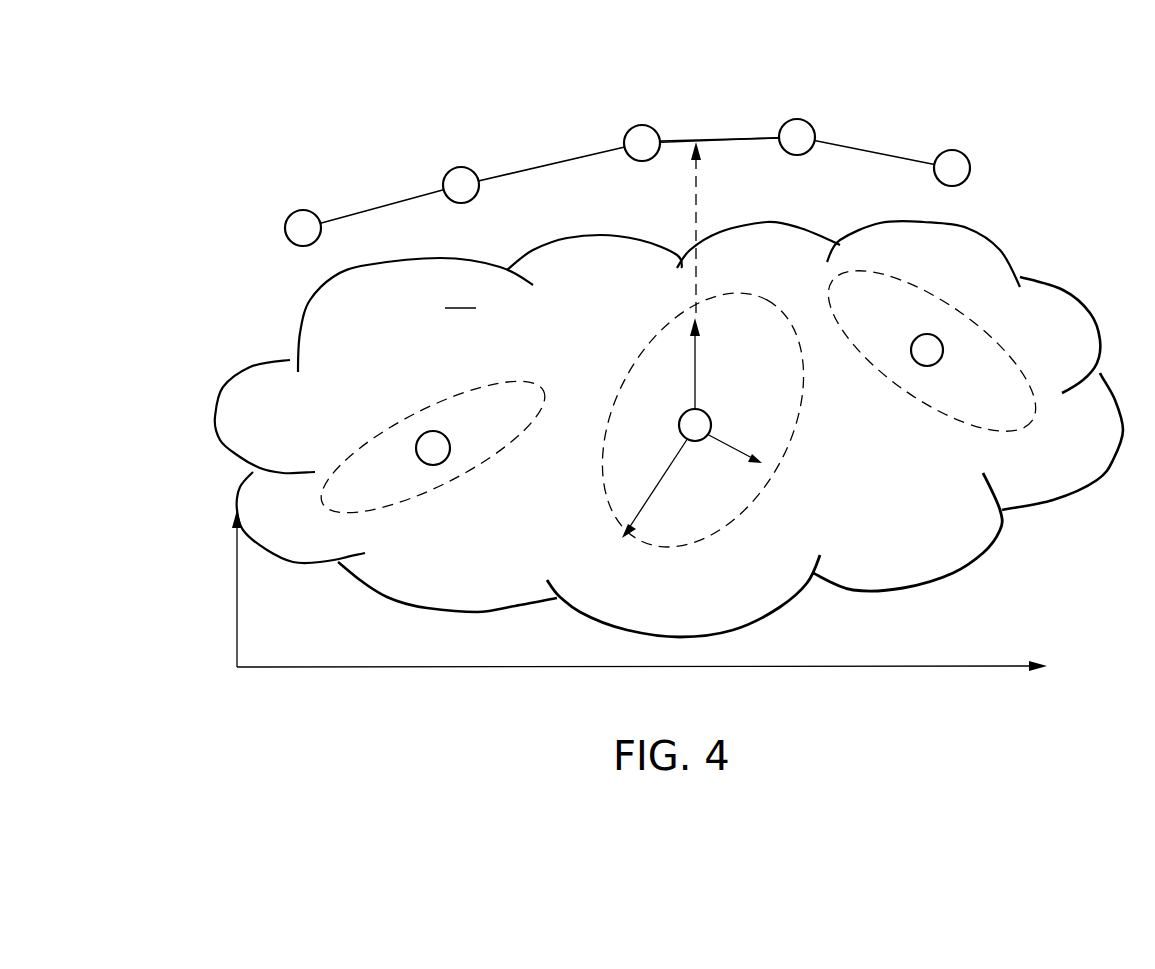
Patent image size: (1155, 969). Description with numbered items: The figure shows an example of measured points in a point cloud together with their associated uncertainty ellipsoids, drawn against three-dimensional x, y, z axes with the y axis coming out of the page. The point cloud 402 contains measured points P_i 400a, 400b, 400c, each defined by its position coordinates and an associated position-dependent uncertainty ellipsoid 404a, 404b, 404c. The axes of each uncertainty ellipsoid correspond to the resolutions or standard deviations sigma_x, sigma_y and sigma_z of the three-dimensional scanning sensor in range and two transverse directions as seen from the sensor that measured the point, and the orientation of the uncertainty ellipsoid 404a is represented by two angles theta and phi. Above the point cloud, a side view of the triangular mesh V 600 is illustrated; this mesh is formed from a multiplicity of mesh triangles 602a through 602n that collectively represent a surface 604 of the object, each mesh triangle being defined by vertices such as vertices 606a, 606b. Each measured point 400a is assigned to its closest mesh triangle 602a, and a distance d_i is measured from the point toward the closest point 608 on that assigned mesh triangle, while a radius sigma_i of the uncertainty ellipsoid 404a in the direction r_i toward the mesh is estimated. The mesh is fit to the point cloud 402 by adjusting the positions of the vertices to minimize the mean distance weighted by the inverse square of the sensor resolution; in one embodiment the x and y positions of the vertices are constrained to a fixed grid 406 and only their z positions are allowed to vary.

The triangular mesh V 600 is at (1030, 125).
The mesh triangle 602a is at (733, 137).
The mesh triangle 602n is at (887, 153).
The surface 604 is at (383, 209).
The vertex 606a is at (632, 127).
The vertex 606b is at (798, 119).
The closest point 608 is at (694, 141).
The point cloud 402 is at (297, 338).
The measured point P_i 400a is at (680, 425).
The measured point P_i 400b is at (433, 431).
The measured point P_i 400c is at (927, 334).
The uncertainty ellipsoid 404a is at (790, 423).
The uncertainty ellipsoid 404b is at (350, 460).
The uncertainty ellipsoid 404c is at (993, 367).
The fixed grid 406 is at (1047, 604).